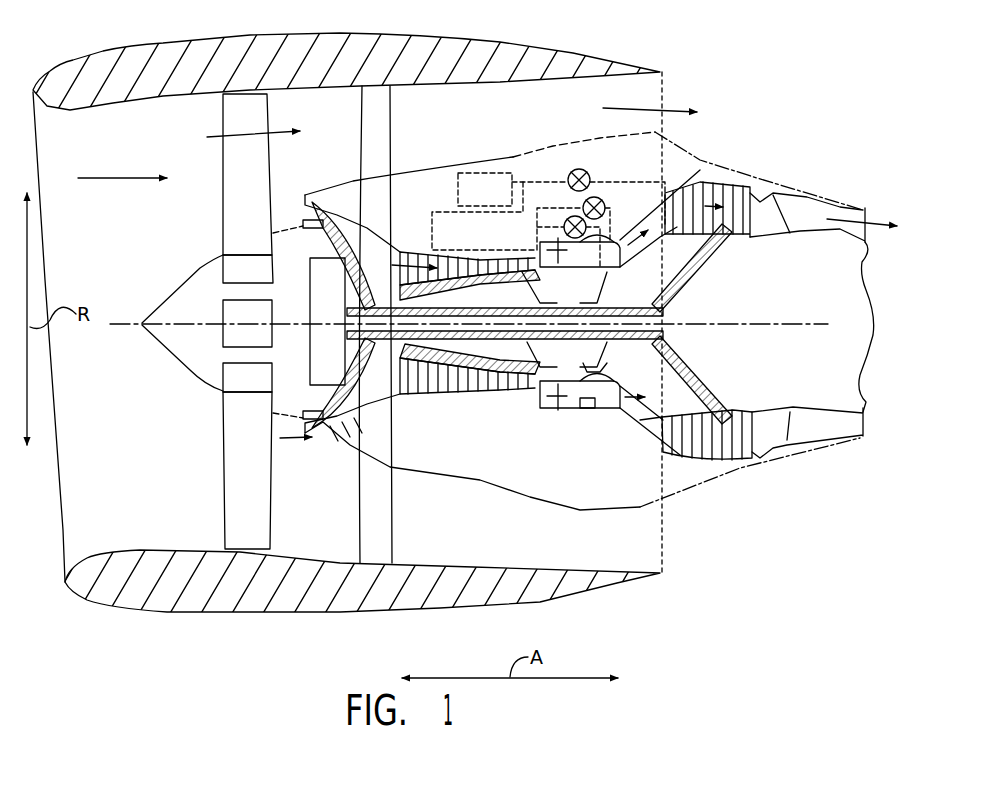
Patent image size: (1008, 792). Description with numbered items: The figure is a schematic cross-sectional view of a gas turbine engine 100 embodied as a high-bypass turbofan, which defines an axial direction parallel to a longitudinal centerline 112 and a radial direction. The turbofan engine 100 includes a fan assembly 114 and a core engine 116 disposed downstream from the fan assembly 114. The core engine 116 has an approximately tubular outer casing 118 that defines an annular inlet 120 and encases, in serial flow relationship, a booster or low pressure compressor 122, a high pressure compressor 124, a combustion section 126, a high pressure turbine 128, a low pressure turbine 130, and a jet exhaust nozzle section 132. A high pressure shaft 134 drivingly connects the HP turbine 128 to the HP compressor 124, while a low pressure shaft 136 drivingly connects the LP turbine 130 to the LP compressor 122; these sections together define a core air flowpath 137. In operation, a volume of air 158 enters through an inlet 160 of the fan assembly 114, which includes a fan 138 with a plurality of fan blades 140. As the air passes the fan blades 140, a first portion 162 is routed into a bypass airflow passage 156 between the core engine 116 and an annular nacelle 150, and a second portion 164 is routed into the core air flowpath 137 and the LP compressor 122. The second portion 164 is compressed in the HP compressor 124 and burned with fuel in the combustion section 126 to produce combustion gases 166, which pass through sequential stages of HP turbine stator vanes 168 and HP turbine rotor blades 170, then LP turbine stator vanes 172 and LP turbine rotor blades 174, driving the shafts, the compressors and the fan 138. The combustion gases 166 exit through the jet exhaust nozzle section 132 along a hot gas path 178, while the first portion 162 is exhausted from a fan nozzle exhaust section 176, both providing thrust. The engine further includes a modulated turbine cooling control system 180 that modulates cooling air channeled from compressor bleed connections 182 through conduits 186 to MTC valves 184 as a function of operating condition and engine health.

The gas turbine engine 100 is at (795, 58).
The longitudinal centerline 112 is at (752, 322).
The fan assembly 114 is at (143, 148).
The core engine 116 is at (483, 405).
The outer casing 118 is at (537, 498).
The annular inlet 120 is at (310, 435).
The low pressure compressor 122 is at (342, 445).
The high pressure compressor 124 is at (420, 397).
The combustion section 126 is at (572, 400).
The high pressure turbine 128 is at (648, 397).
The low pressure turbine 130 is at (740, 462).
The jet exhaust nozzle section 132 is at (790, 446).
The high pressure shaft 134 is at (590, 289).
The low pressure shaft 136 is at (679, 291).
The core air flowpath 137 is at (393, 490).
The fan 138 is at (187, 376).
The fan blades 140 is at (222, 484).
The annular nacelle 150 is at (262, 615).
The bypass airflow passage 156 is at (480, 123).
The volume of air 158 is at (117, 178).
The inlet 160 is at (65, 558).
The first portion of air 162 is at (235, 133).
The second portion of air 164 is at (297, 200).
The combustion gases 166 is at (702, 195).
The HP turbine stator vanes 168 is at (587, 403).
The HP turbine rotor blades 170 is at (602, 372).
The LP turbine stator vanes 172 is at (675, 457).
The LP turbine rotor blades 174 is at (676, 466).
The fan nozzle exhaust section 176 is at (673, 87).
The hot gas path 178 is at (759, 177).
The modulated turbine cooling control system 180 is at (548, 220).
The compressor bleed connection 182 is at (541, 154).
The MTC valve 184 is at (603, 167).
The conduit 186 is at (675, 178).